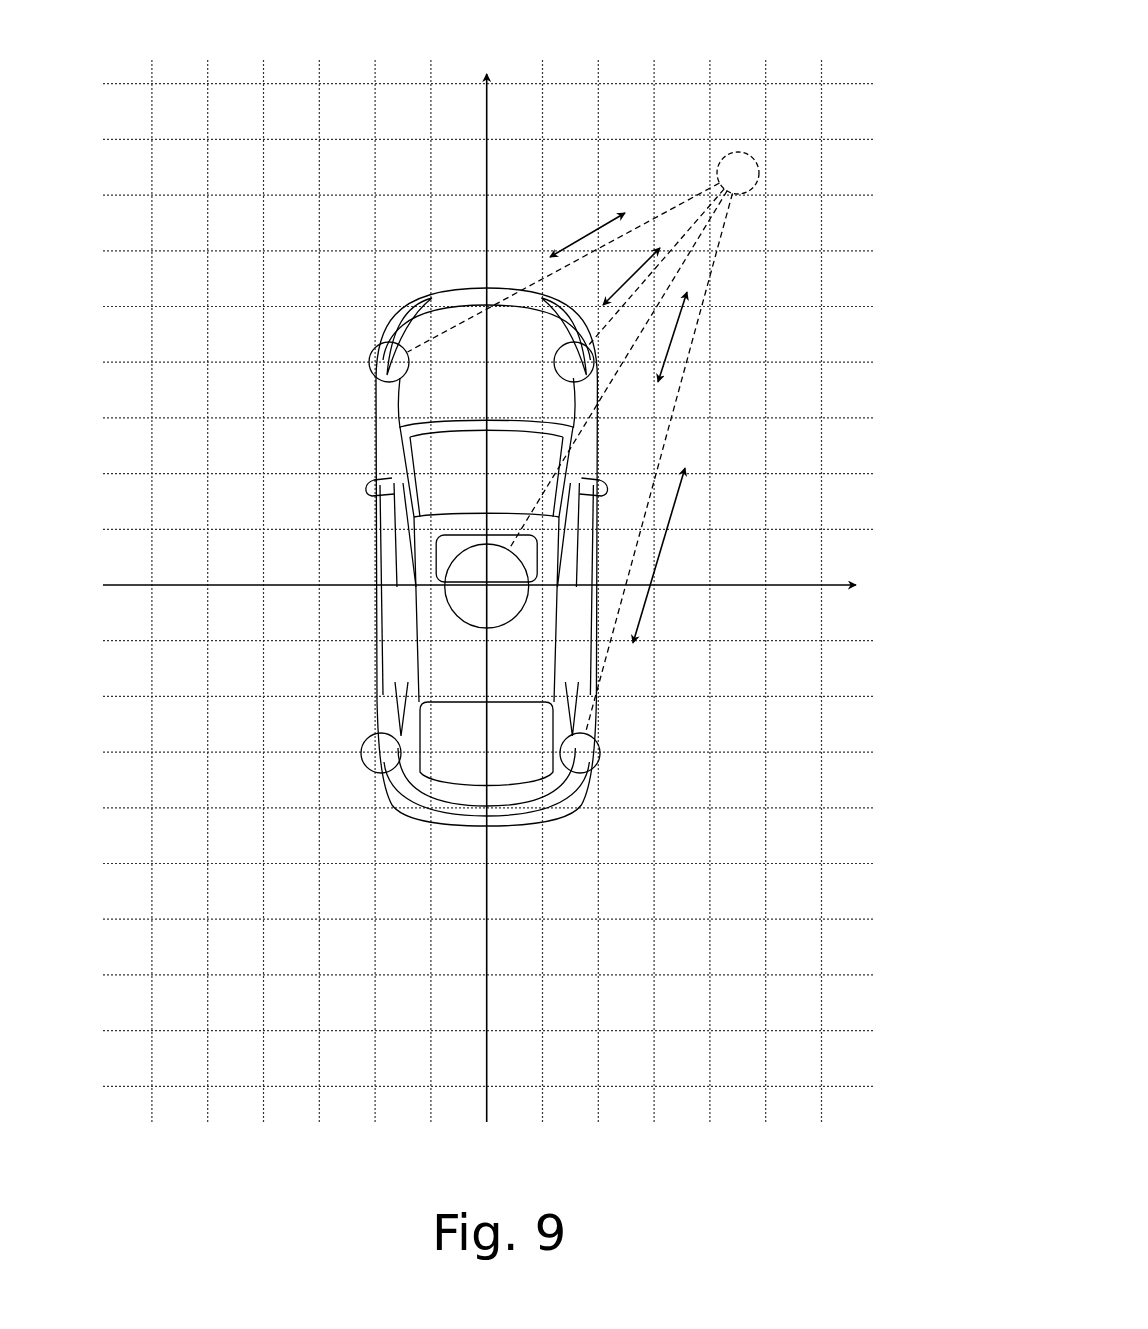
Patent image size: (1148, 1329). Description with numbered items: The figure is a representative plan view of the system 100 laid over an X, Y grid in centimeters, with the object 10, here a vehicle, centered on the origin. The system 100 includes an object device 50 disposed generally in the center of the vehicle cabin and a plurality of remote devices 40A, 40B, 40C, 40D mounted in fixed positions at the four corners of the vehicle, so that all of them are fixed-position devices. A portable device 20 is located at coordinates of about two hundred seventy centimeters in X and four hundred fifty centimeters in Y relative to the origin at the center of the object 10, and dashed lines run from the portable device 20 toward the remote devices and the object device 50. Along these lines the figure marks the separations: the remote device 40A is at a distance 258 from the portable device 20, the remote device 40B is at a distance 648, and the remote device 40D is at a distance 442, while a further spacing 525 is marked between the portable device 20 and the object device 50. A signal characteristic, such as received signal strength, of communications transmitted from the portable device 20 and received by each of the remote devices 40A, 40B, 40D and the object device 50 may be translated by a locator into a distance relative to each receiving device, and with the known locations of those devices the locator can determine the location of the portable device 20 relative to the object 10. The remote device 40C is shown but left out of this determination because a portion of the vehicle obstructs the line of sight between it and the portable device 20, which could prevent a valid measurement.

The system 100 is at (348, 148).
The object 10 is at (377, 578).
The portable device 20 is at (738, 152).
The remote device 40A is at (553, 362).
The remote device 40B is at (600, 748).
The remote device 40C is at (373, 742).
The remote device 40D is at (368, 360).
The object device 50 is at (503, 626).
The distance between remote device 40D and portable device 442 is at (580, 239).
The distance between remote device 40A and portable device 258 is at (634, 289).
The distance from vehicle center to object 525 is at (665, 338).
The distance between remote device 40B and portable device 648 is at (655, 563).